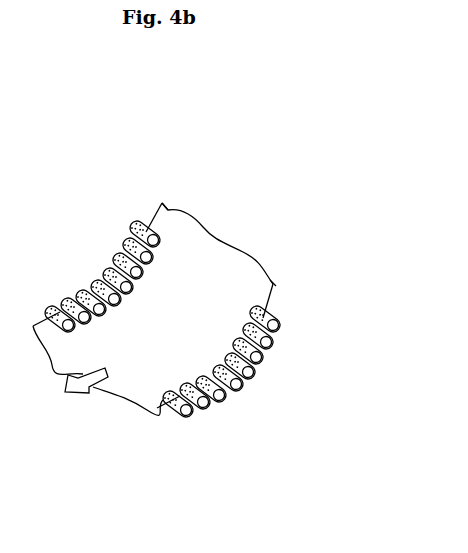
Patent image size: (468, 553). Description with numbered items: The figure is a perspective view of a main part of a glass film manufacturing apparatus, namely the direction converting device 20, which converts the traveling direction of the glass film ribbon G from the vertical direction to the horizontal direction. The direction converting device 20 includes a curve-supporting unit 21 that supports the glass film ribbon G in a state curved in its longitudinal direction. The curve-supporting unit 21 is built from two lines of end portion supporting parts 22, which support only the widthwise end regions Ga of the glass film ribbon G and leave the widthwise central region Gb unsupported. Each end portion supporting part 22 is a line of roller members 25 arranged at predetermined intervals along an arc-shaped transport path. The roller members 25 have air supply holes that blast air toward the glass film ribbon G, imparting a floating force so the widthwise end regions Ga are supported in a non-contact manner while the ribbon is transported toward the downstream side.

The direction converting device 20 is at (108, 207).
The curve-supporting unit 21 is at (173, 423).
The end portion supporting part 22 is at (102, 252).
The roller member 25 is at (98, 282).
The glass film ribbon G is at (172, 343).
The widthwise end region Ga is at (167, 213).
The widthwise central region Gb is at (210, 260).